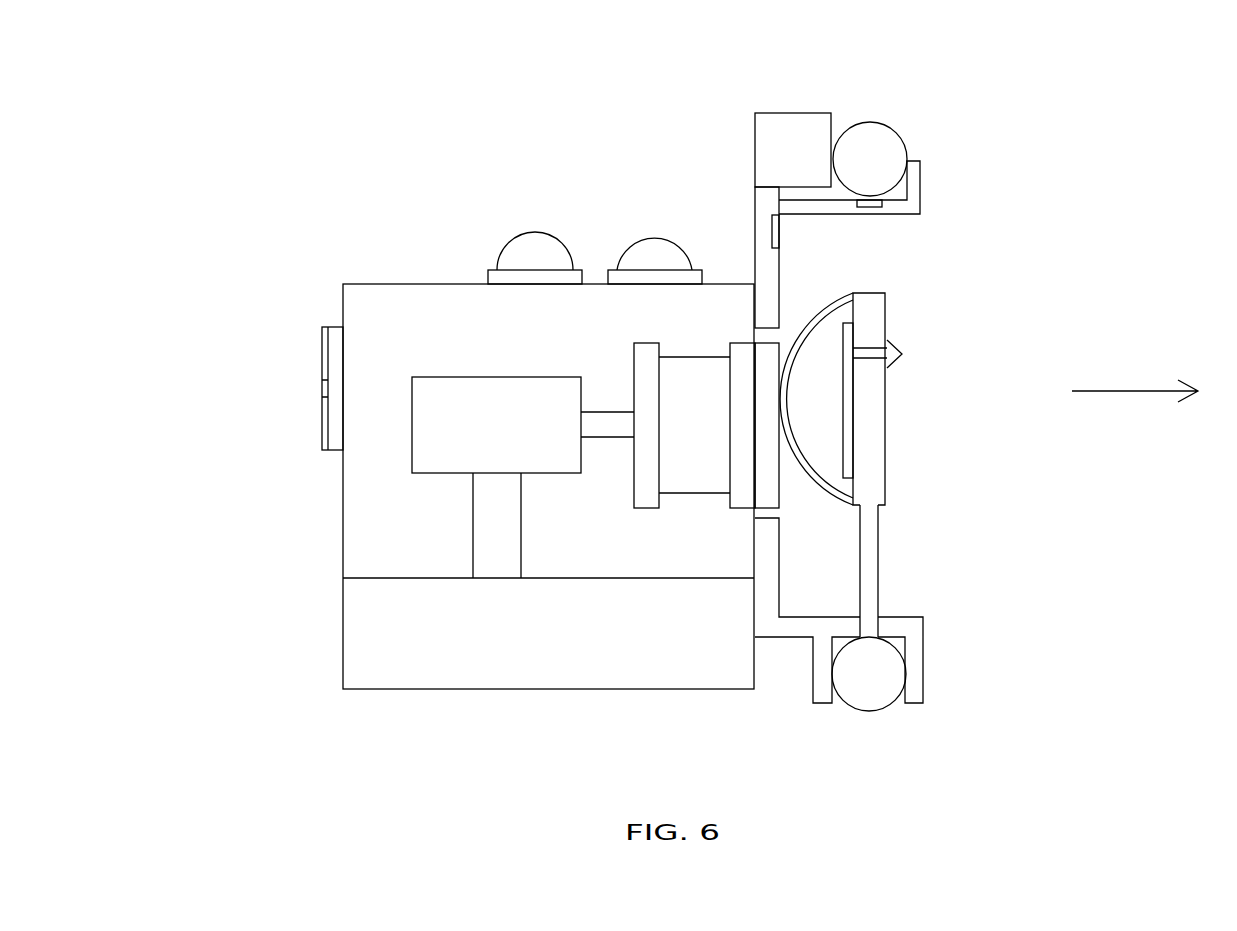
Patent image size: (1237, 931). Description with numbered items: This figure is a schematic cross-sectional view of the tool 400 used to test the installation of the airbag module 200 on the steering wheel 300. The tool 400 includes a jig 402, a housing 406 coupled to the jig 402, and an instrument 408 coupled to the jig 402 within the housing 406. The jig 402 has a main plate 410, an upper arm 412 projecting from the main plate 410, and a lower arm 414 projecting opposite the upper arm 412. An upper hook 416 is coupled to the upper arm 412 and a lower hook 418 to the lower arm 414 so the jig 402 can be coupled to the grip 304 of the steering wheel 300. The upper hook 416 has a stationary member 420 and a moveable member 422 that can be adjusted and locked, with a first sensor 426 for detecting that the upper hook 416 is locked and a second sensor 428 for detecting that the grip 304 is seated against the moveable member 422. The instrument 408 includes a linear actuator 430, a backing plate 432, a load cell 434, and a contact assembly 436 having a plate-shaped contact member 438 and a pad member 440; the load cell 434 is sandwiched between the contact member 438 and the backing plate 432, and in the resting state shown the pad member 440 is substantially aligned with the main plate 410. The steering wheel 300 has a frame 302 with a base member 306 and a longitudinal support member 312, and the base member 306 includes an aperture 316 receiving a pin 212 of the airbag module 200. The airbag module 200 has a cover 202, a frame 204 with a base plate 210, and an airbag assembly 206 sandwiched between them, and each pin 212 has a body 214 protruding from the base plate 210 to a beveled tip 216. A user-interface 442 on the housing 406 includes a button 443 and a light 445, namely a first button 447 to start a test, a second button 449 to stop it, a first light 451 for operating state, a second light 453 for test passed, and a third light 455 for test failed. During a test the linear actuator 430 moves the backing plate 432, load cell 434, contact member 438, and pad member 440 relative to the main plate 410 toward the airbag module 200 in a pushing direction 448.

The airbag module 200 is at (802, 310).
The cover 202 is at (838, 505).
The frame 204 is at (852, 442).
The airbag assembly 206 is at (807, 413).
The base plate 210 is at (847, 462).
The pin 212 is at (905, 342).
The body 214 is at (865, 353).
The tip 216 is at (887, 358).
The steering wheel 300 is at (900, 282).
The frame 302 is at (888, 520).
The grip 304 is at (905, 141).
The base member 306 is at (867, 490).
The longitudinal support member 312 is at (867, 579).
The aperture 316 is at (870, 362).
The tool 400 is at (432, 180).
The jig 402 is at (740, 183).
The housing 406 is at (370, 283).
The instrument 408 is at (530, 240).
The main plate 410 is at (754, 222).
The upper arm 412 is at (754, 132).
The lower arm 414 is at (813, 658).
The upper hook 416 is at (902, 100).
The lower hook 418 is at (923, 658).
The stationary member 420 is at (832, 112).
The moveable member 422 is at (825, 215).
The first sensor 426 is at (774, 188).
The second sensor 428 is at (870, 208).
The linear actuator 430 is at (480, 377).
The backing plate 432 is at (633, 343).
The load cell 434 is at (692, 375).
The contact assembly 436 is at (715, 510).
The contact member 438 is at (742, 497).
The pad member 440 is at (770, 495).
The user-interface 442 is at (418, 222).
The button 443 is at (310, 406).
The light 445 is at (587, 185).
The first button 447 is at (322, 338).
The pushing direction 448 is at (1122, 391).
The second button 449 is at (322, 433).
The first light 451 is at (322, 384).
The second light 453 is at (683, 247).
The third light 455 is at (580, 357).